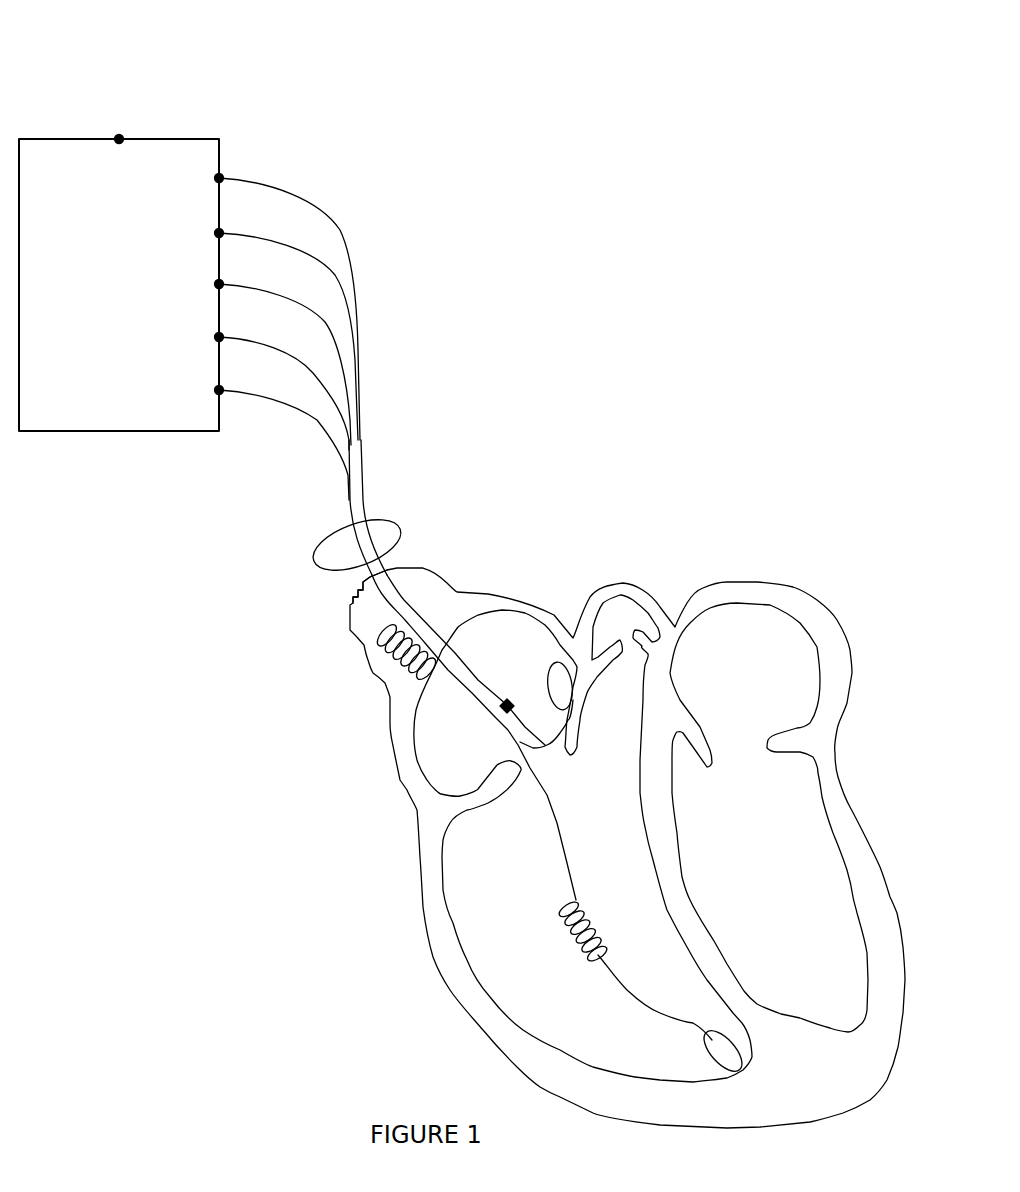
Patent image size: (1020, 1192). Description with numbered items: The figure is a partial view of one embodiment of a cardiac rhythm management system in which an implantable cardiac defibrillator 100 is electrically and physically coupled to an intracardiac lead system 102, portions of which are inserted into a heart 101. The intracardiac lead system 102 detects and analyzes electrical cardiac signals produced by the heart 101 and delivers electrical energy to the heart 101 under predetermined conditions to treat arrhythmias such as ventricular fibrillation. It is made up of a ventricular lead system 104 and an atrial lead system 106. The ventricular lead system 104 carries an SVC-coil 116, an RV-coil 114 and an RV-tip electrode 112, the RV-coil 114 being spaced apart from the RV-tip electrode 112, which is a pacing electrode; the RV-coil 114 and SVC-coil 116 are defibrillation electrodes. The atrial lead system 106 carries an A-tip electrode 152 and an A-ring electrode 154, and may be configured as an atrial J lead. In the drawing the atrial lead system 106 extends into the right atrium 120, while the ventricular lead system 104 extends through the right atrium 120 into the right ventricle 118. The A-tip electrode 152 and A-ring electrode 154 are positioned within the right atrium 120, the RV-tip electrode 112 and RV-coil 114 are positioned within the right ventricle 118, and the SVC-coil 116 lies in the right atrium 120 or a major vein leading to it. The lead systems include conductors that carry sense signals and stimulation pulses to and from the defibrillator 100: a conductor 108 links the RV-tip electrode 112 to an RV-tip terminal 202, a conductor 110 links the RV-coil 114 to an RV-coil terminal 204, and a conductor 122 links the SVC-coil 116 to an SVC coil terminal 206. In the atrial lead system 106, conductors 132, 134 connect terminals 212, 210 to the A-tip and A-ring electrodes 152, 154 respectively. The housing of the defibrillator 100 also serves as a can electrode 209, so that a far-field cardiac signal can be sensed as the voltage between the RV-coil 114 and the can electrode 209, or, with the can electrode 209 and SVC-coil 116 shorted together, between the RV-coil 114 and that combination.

The implantable cardiac defibrillator 100 is at (45, 139).
The heart 101 is at (758, 582).
The intracardiac lead system 102 is at (403, 528).
The ventricular lead system 104 is at (363, 582).
The atrial lead system 106 is at (367, 502).
The conductor 108 is at (313, 416).
The conductor 110 is at (312, 358).
The RV-tip electrode 112 is at (707, 1044).
The RV-coil 114 is at (573, 933).
The SVC-coil 116 is at (392, 648).
The right ventricle 118 is at (591, 838).
The right atrium 120 is at (504, 738).
The conductor 122 is at (312, 308).
The conductor 132 is at (328, 210).
The conductor 134 is at (330, 255).
The A-tip electrode 152 is at (553, 663).
The A-ring electrode 154 is at (510, 705).
The RV-tip terminal 202 is at (219, 390).
The RV-coil terminal 204 is at (219, 337).
The SVC coil terminal 206 is at (219, 284).
The can electrode 209 is at (119, 139).
The terminal 210 is at (219, 233).
The terminal 212 is at (219, 178).